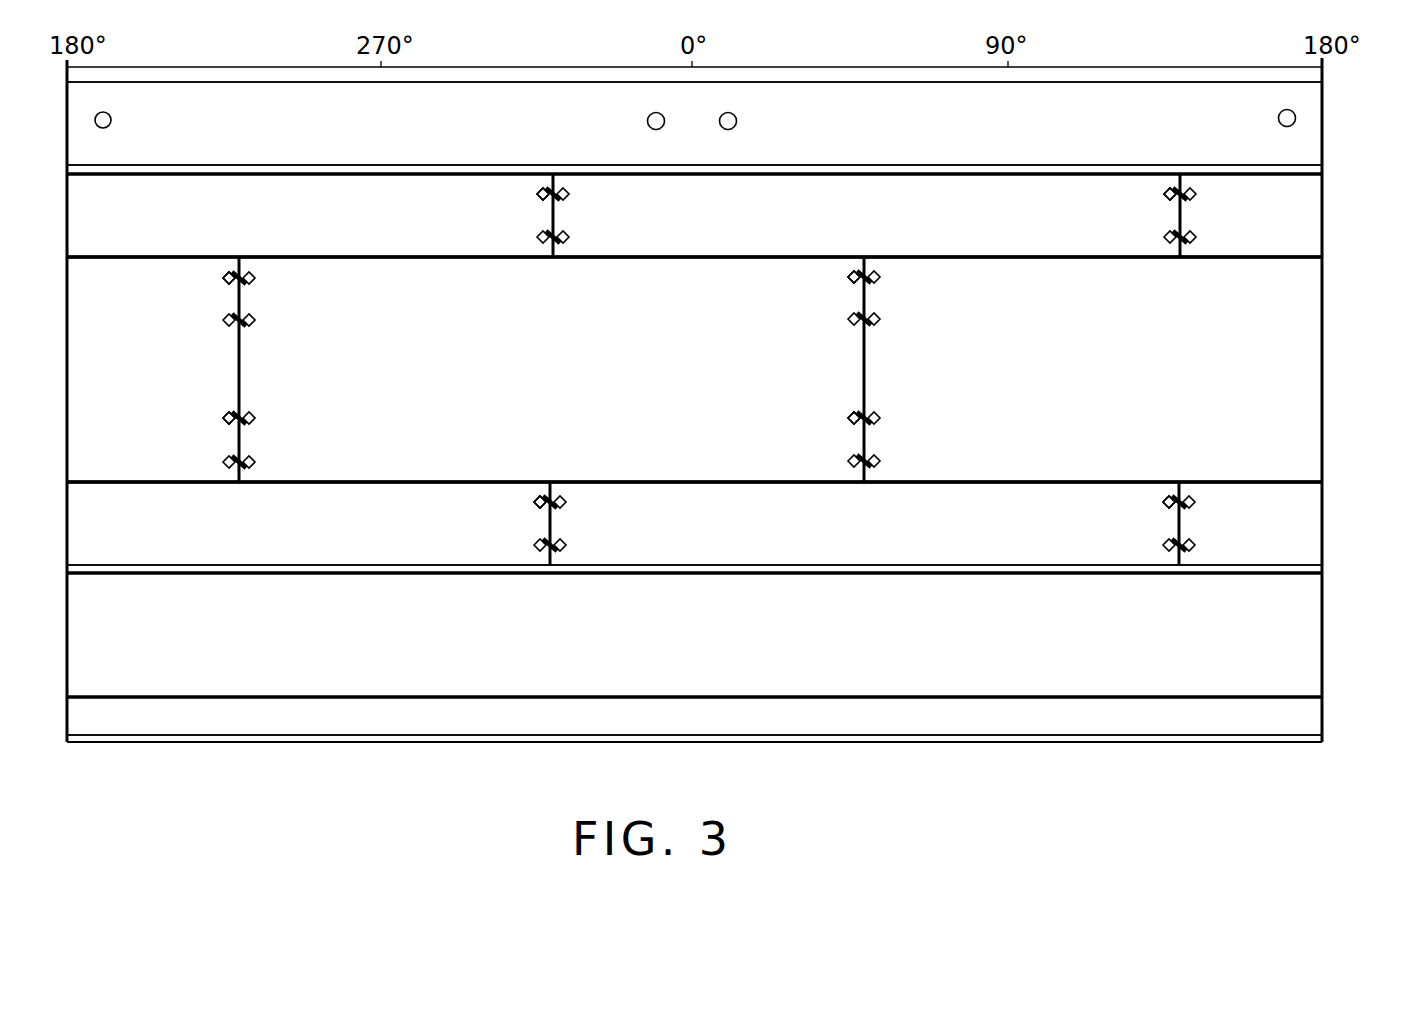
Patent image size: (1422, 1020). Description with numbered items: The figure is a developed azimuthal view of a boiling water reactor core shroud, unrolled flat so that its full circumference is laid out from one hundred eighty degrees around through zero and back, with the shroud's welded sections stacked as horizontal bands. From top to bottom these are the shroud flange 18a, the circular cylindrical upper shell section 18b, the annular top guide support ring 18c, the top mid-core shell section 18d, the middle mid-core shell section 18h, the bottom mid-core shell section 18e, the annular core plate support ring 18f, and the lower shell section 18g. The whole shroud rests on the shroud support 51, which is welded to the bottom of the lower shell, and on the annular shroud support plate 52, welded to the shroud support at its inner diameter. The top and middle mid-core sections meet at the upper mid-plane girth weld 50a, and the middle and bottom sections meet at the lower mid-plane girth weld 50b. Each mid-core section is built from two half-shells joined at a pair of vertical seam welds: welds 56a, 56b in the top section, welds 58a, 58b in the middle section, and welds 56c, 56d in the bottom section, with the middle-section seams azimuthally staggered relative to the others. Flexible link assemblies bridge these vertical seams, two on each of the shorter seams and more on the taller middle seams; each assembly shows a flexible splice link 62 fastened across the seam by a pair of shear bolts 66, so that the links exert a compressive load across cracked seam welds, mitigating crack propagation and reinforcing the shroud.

The shroud flange 18a is at (1316, 73).
The upper shell section 18b is at (1316, 128).
The top guide support ring 18c is at (1308, 168).
The top mid-core shell section 18d is at (1316, 210).
The bottom mid-core shell section 18e is at (1316, 519).
The core plate support ring 18f is at (1308, 566).
The lower shell section 18g is at (1316, 645).
The middle mid-core shell section 18h is at (1316, 372).
The upper mid-plane girth weld 50a is at (957, 255).
The lower mid-plane girth weld 50b is at (955, 480).
The shroud support 51 is at (1316, 713).
The shroud support plate 52 is at (1207, 737).
The vertical seam weld 56a is at (550, 252).
The vertical seam weld 56b is at (1178, 252).
The vertical seam weld 56c is at (555, 487).
The vertical seam weld 56d is at (1184, 485).
The vertical seam weld 58a is at (241, 366).
The vertical seam weld 58b is at (866, 367).
The flexible splice link 62 is at (558, 199).
The shear bolts 66 is at (542, 193).